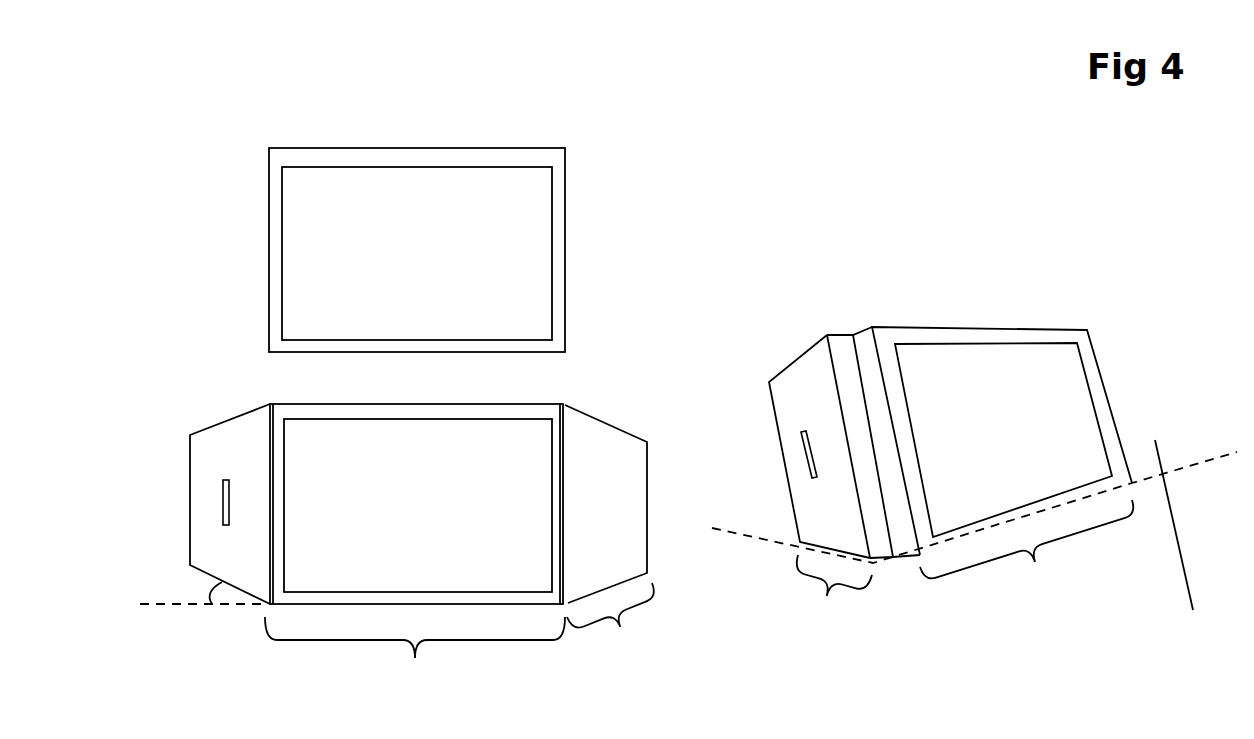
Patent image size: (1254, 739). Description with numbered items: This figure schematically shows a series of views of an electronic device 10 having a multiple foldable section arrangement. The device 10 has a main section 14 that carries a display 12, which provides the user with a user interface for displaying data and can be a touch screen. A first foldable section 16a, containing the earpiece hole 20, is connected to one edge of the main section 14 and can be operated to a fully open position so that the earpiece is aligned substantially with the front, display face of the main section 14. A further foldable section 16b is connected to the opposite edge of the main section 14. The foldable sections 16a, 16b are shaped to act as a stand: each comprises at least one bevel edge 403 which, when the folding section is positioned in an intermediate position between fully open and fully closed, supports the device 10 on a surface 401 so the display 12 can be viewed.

The device 10 is at (523, 153).
The display 12 is at (380, 215).
The main section 14 is at (699, 601).
The first foldable section 16a is at (820, 488).
The further foldable section 16b is at (618, 539).
The earpiece hole 20 is at (223, 496).
The surface 401 is at (974, 548).
The bevel edge 403 is at (190, 580).